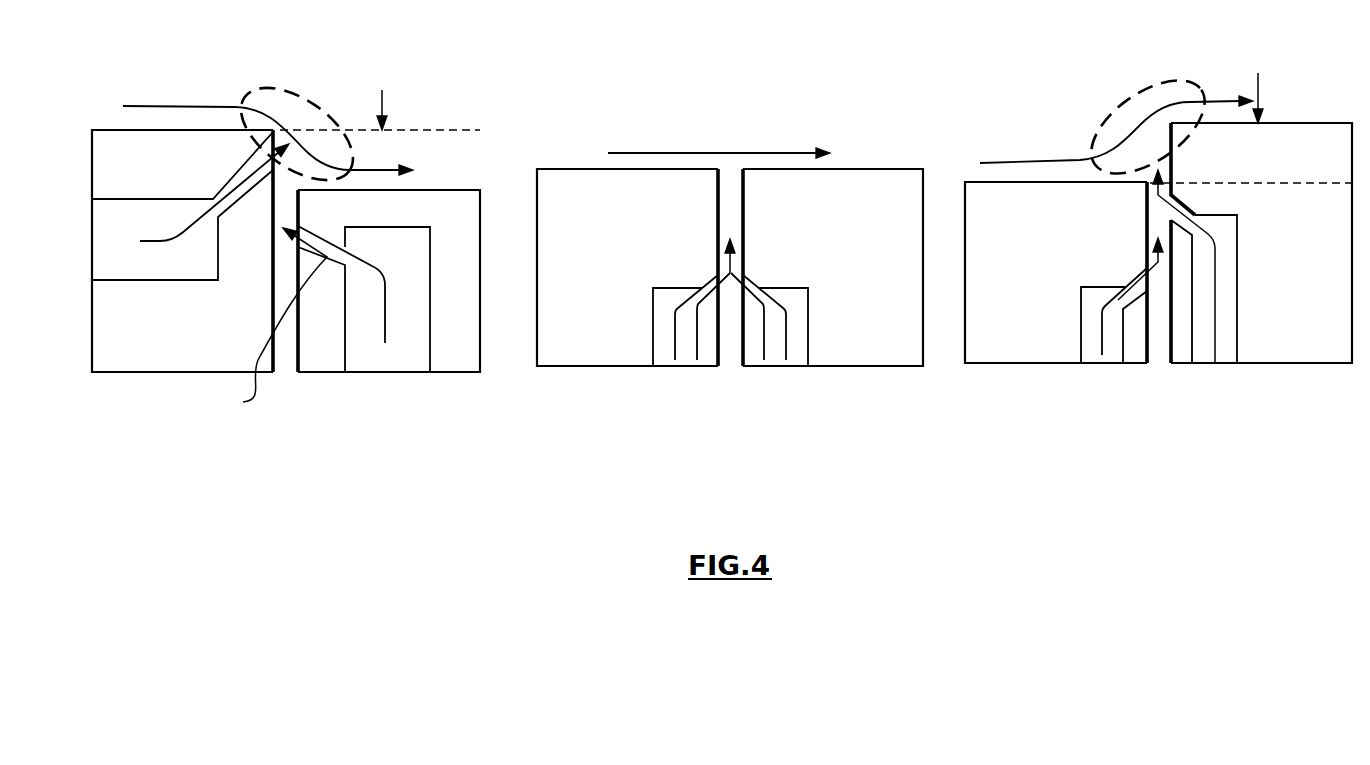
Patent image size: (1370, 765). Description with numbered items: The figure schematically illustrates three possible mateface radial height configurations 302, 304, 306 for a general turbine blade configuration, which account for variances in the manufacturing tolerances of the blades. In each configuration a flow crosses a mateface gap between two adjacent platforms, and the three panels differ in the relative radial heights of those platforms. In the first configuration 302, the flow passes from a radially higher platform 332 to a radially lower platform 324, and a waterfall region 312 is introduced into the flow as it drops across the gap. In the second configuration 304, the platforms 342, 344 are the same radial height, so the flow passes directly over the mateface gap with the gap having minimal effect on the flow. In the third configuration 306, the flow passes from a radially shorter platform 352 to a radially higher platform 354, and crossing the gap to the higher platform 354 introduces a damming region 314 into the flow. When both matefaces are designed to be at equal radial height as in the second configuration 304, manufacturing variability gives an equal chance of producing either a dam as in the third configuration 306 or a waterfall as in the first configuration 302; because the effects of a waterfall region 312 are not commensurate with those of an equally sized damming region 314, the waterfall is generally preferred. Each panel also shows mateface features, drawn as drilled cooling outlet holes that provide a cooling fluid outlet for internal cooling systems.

The first configuration 302 is at (282, 253).
The second configuration 304 is at (730, 274).
The third configuration 306 is at (1159, 250).
The waterfall region 312 is at (313, 105).
The damming region 314 is at (1132, 97).
The downstream component 324 is at (452, 352).
The radially higher platform 332 is at (148, 353).
The platform 342 is at (622, 353).
The platform 344 is at (813, 355).
The radially shorter platform 352 is at (1037, 353).
The radially higher platform 354 is at (1293, 353).